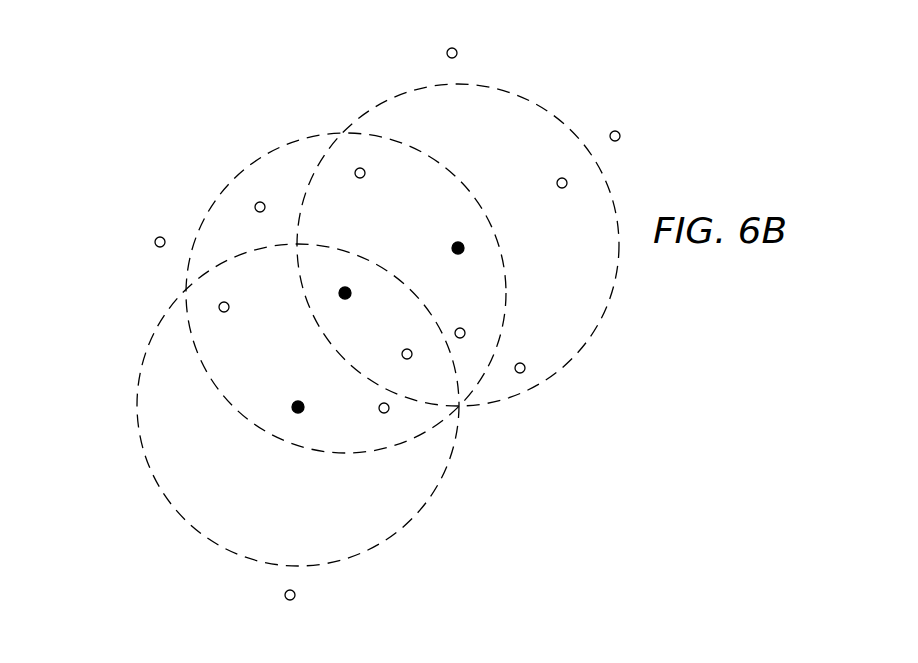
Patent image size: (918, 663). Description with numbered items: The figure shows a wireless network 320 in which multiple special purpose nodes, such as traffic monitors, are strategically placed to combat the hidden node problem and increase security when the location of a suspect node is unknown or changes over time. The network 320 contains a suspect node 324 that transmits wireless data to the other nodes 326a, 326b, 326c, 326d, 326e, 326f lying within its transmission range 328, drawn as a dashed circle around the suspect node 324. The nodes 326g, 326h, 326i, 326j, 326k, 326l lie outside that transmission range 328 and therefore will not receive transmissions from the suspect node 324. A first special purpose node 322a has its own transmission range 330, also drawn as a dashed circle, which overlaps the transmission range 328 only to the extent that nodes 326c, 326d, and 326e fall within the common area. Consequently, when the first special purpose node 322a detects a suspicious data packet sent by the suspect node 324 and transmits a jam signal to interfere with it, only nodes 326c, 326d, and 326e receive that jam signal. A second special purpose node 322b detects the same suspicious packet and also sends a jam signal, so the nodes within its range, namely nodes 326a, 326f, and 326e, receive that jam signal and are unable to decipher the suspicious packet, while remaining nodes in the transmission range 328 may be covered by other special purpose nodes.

The wireless network 320 is at (576, 66).
The transmission range of suspect node 328 is at (303, 137).
The transmission range of first special purpose node 330 is at (138, 422).
The suspect node 324 is at (351, 290).
The first special purpose node 322a is at (294, 405).
The second special purpose node 322b is at (455, 246).
The node 326a is at (358, 178).
The node 326b is at (256, 204).
The node 326c is at (229, 310).
The node 326d is at (380, 411).
The node 326e is at (403, 352).
The node 326f is at (461, 328).
The node 326g is at (523, 364).
The node 326h is at (557, 182).
The node 326i is at (620, 135).
The node 326j is at (447, 52).
The node 326k is at (155, 240).
The node 326l is at (285, 597).